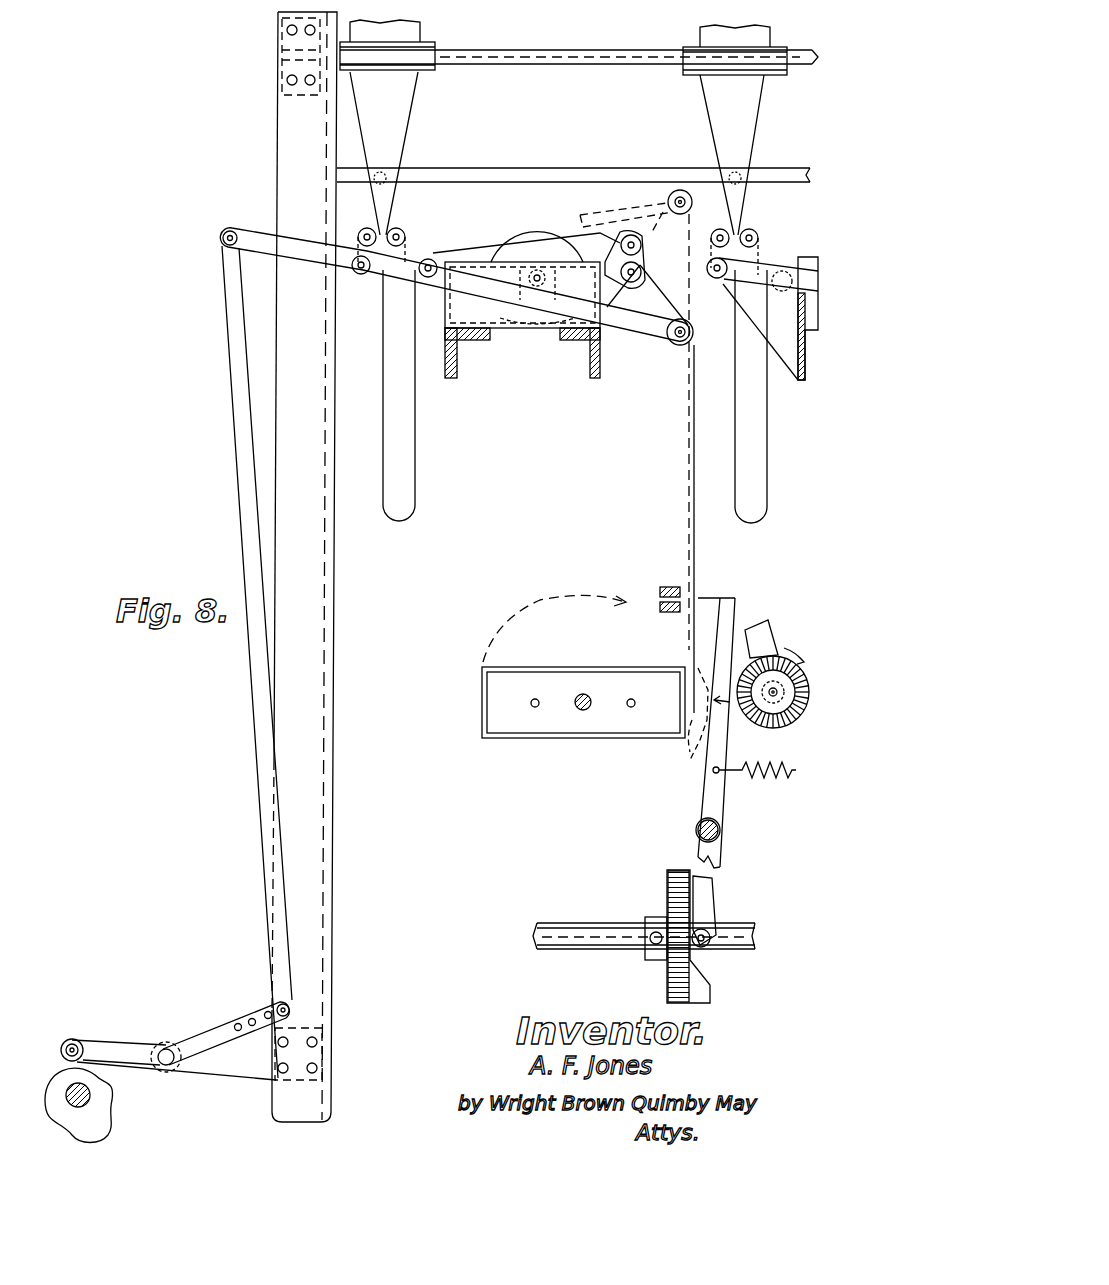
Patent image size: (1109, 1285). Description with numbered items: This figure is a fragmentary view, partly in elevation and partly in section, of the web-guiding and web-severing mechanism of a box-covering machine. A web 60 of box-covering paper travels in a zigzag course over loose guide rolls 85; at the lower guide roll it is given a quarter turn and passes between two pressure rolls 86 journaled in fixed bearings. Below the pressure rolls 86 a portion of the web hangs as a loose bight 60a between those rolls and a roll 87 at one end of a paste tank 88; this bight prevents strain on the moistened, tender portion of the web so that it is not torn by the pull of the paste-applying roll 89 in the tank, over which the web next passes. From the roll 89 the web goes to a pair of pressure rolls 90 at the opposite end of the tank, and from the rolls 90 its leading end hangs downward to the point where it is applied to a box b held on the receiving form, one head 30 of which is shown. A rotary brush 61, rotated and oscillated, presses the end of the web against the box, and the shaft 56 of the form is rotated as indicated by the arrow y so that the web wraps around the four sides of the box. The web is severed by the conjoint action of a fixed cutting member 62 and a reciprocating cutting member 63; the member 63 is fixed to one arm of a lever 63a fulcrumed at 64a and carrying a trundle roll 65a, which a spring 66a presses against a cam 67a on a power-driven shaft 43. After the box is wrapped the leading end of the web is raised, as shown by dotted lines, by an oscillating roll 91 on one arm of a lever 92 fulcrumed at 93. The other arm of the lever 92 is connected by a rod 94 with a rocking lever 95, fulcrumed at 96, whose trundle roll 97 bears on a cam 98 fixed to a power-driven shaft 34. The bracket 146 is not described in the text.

The loose guide rolls 85 is at (428, 56).
The web 60 is at (402, 127).
The pressure rolls 86 is at (360, 228).
The fulcrum 93 is at (362, 276).
The lever 92 is at (640, 332).
The roll 87 is at (430, 258).
The paste tank 88 is at (476, 256).
The paste-applying roll 89 is at (530, 242).
The pressure rolls 90 is at (638, 258).
The oscillating roll 91 is at (687, 190).
The loose bight 60a is at (416, 428).
The rod 94 is at (242, 486).
The fixed cutting member 62 is at (668, 585).
The reciprocating cutting member 63 is at (720, 600).
The bracket 146 is at (772, 636).
The rotary brush 61 is at (688, 746).
The head 30 is at (640, 728).
The shaft 56 is at (577, 708).
The box b is at (584, 738).
The arrow y is at (550, 598).
The spring 66a is at (757, 781).
The lever 63a is at (720, 806).
The fulcrum 64a is at (722, 836).
The power-driven shaft 43 is at (595, 925).
The cam 67a is at (710, 985).
The trundle roll 65a is at (710, 946).
The rocking lever 95 is at (200, 1022).
The fulcrum 96 is at (165, 1047).
The trundle roll 97 is at (78, 1040).
The cam 98 is at (113, 1102).
The power-driven shaft 34 is at (74, 1108).